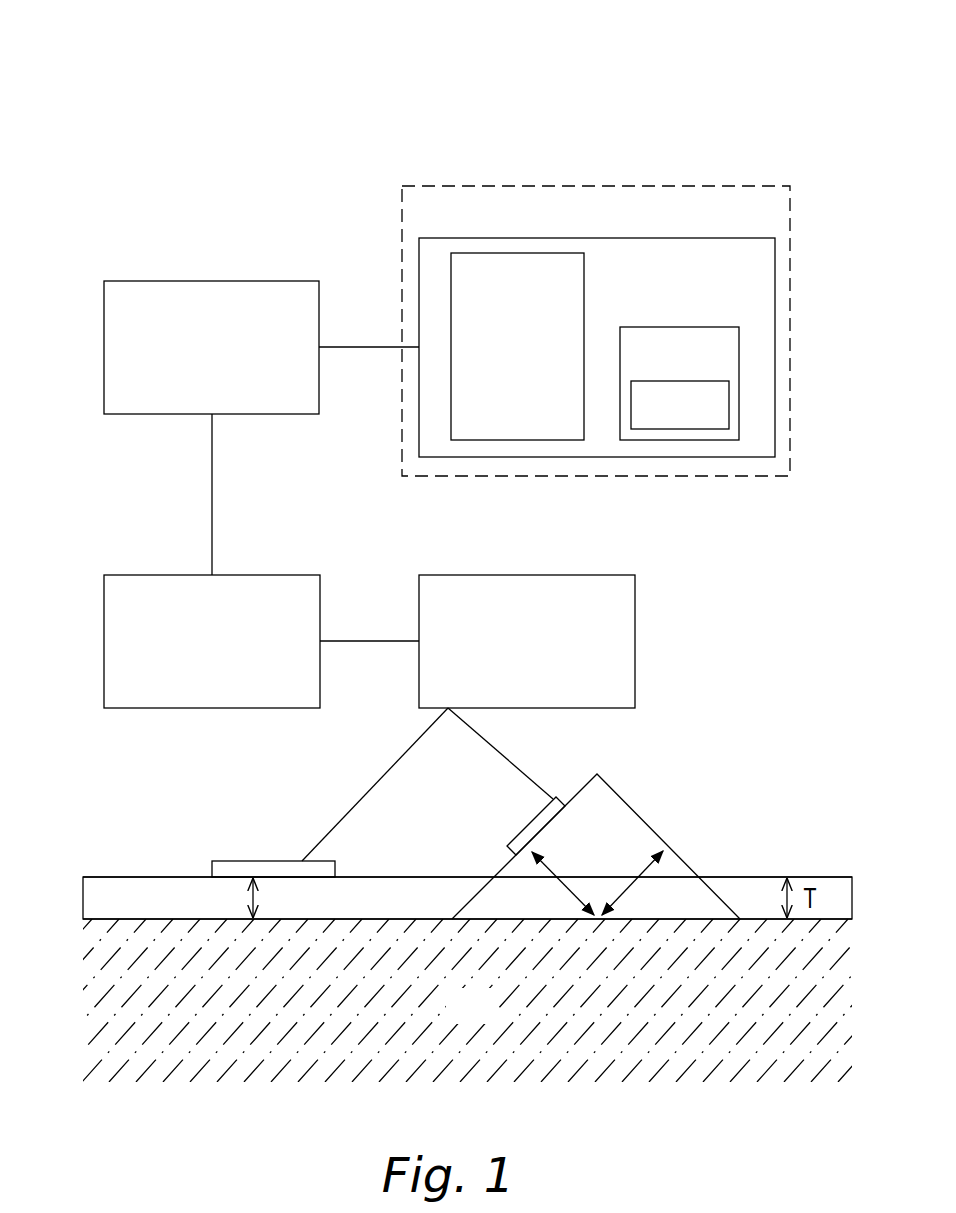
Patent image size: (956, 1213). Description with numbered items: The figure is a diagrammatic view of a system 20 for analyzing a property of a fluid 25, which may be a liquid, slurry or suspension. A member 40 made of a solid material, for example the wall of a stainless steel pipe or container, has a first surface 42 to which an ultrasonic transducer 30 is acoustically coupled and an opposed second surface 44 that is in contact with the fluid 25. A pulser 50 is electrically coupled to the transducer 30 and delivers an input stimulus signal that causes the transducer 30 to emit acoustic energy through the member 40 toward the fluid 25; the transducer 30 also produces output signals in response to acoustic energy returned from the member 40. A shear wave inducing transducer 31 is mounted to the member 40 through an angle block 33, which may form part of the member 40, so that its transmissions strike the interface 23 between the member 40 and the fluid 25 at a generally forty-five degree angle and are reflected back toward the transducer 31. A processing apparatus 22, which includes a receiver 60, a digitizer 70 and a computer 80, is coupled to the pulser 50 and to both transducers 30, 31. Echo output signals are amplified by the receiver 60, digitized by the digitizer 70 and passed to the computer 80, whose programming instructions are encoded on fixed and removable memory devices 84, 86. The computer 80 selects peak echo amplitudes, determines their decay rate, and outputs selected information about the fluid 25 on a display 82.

The system 20 is at (163, 92).
The processing apparatus 22 is at (739, 224).
The computer 80 is at (700, 286).
The display 82 is at (499, 363).
The fixed memory device 84 is at (662, 363).
The removable memory device 86 is at (662, 418).
The digitizer 70 is at (192, 368).
The receiver 60 is at (192, 661).
The pulser 50 is at (507, 661).
The ultrasonic transducer 30 is at (230, 861).
The shear wave inducing transducer 31 is at (508, 843).
The angle block 33 is at (623, 815).
The interface 23 is at (600, 918).
The member 40 is at (120, 877).
The first surface 42 is at (804, 874).
The second surface 44 is at (90, 928).
The fluid 25 is at (453, 1018).